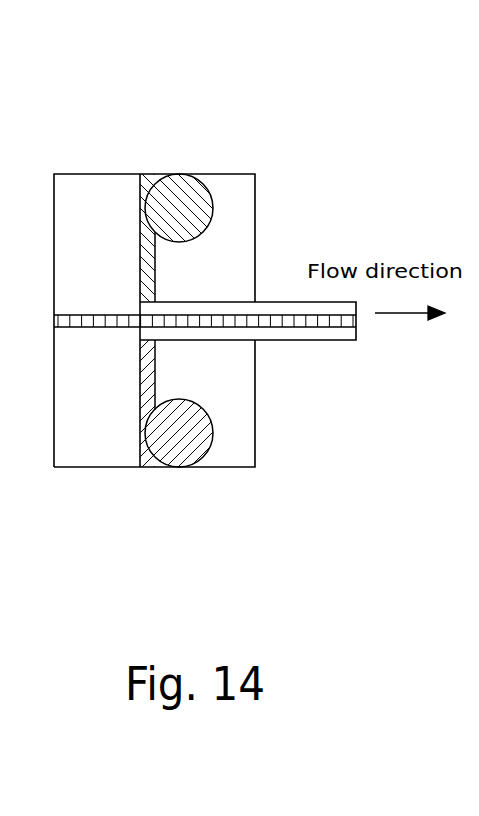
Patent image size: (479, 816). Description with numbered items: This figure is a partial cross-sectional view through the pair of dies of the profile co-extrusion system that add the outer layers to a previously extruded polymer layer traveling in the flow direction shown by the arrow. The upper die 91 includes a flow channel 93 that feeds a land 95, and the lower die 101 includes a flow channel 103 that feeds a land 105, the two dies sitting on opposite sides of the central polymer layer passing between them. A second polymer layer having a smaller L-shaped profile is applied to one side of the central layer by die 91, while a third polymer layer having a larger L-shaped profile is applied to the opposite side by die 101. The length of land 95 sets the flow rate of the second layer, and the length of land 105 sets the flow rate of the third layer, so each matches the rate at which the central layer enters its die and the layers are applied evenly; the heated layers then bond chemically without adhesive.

The die 91 is at (237, 190).
The flow channel 93 is at (180, 200).
The land 95 is at (157, 268).
The die 101 is at (228, 380).
The flow channel 103 is at (215, 445).
The land 105 is at (140, 385).